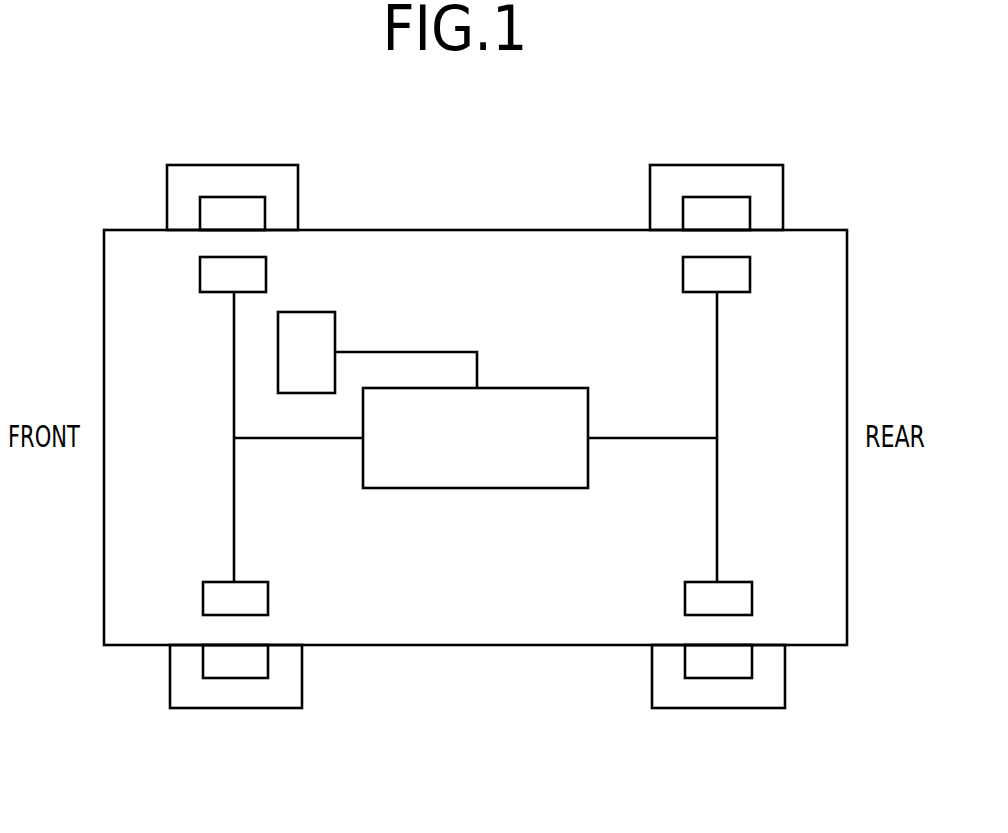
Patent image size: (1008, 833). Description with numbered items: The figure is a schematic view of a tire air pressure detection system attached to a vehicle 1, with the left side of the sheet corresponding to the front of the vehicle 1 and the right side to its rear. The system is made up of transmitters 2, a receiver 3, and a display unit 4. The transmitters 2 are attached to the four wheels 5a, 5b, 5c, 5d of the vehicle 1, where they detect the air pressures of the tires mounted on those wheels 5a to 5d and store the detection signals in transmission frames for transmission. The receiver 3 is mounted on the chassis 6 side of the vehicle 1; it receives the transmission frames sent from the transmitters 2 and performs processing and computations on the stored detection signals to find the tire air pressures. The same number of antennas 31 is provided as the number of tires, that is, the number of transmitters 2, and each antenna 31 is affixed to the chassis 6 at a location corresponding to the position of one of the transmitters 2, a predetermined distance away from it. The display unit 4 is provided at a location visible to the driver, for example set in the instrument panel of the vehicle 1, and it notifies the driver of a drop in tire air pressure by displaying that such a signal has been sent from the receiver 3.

The vehicle 1 is at (468, 230).
The transmitter 2 is at (223, 197).
The receiver 3 is at (540, 388).
The display unit 4 is at (330, 312).
The wheel 5a is at (278, 165).
The wheel 5b is at (292, 708).
The wheel 5c is at (760, 165).
The wheel 5d is at (775, 708).
The chassis 6 is at (560, 230).
The antenna 31 is at (266, 271).